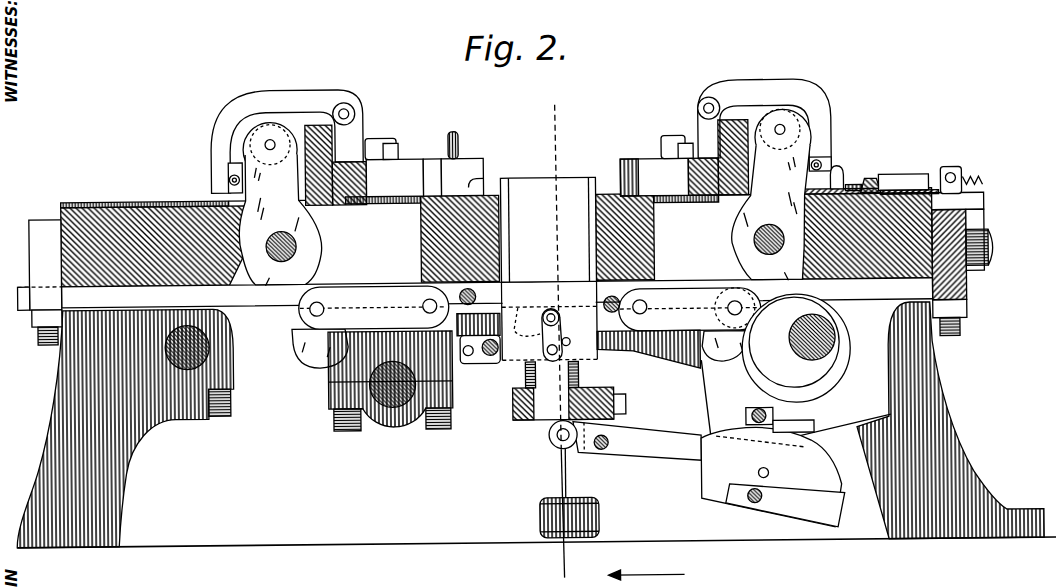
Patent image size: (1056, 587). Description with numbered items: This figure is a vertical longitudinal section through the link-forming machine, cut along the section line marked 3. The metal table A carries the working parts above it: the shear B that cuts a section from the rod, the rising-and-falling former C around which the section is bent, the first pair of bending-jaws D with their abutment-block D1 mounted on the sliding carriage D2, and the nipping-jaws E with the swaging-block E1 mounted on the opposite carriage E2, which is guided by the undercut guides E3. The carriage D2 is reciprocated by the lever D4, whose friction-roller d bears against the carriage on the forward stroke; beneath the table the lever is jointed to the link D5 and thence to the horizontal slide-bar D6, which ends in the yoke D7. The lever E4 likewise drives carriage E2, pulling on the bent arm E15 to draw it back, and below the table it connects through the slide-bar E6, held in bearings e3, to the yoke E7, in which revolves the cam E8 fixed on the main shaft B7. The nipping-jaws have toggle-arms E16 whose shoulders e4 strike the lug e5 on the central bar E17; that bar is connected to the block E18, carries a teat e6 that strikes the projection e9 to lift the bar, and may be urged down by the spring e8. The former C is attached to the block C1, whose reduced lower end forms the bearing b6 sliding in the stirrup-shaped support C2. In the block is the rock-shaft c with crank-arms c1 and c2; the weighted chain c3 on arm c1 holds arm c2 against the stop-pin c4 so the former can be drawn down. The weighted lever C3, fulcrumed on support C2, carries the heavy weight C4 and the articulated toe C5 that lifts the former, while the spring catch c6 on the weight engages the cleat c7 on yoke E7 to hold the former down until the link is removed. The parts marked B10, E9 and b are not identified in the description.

The table A is at (497, 237).
The shear B is at (473, 364).
The main shaft B7 is at (807, 321).
The screw B10 is at (490, 363).
The former C is at (548, 229).
The block C1 is at (549, 320).
The stirrup-shaped support C2 is at (512, 418).
The lever C3 is at (656, 464).
The heavy weight C4 is at (771, 477).
The articulated toe C5 is at (550, 441).
The bending-jaws D is at (466, 158).
The abutment-block D1 is at (406, 158).
The sliding carriage D2 is at (336, 165).
The lever D4 is at (293, 245).
The link D5 is at (214, 100).
The slide-bar D6 is at (374, 308).
The yoke D7 is at (187, 347).
The nipping-jaws E is at (640, 145).
The swaging-block E1 is at (654, 177).
The carriage E2 is at (718, 158).
The undercut guides E3 is at (690, 309).
The lever E4 is at (757, 235).
The slide-bar E6 is at (497, 307).
The yoke E7 is at (872, 421).
The cam E8 is at (796, 348).
The pin E9 is at (390, 381).
The bent arm E15 is at (764, 125).
The toggle-arms E16 is at (880, 179).
The central bar E17 is at (925, 177).
The block E18 is at (985, 228).
The bushing b is at (456, 200).
The bearing b6 is at (569, 390).
The rock-shaft c is at (552, 335).
The crank-arm c1 is at (527, 322).
The crank-arm c2 is at (560, 318).
The weighted chain c3 is at (567, 483).
The stop-pin c4 is at (571, 342).
The spring catch c6 is at (838, 525).
The cleat c7 is at (813, 429).
The friction-roller d is at (303, 131).
The bearings e3 is at (44, 283).
The shoulders e4 is at (868, 181).
The lug e5 is at (778, 126).
The teat e6 is at (838, 169).
The spring e8 is at (986, 185).
The projection e9 is at (952, 176).
The section line 3 is at (562, 337).